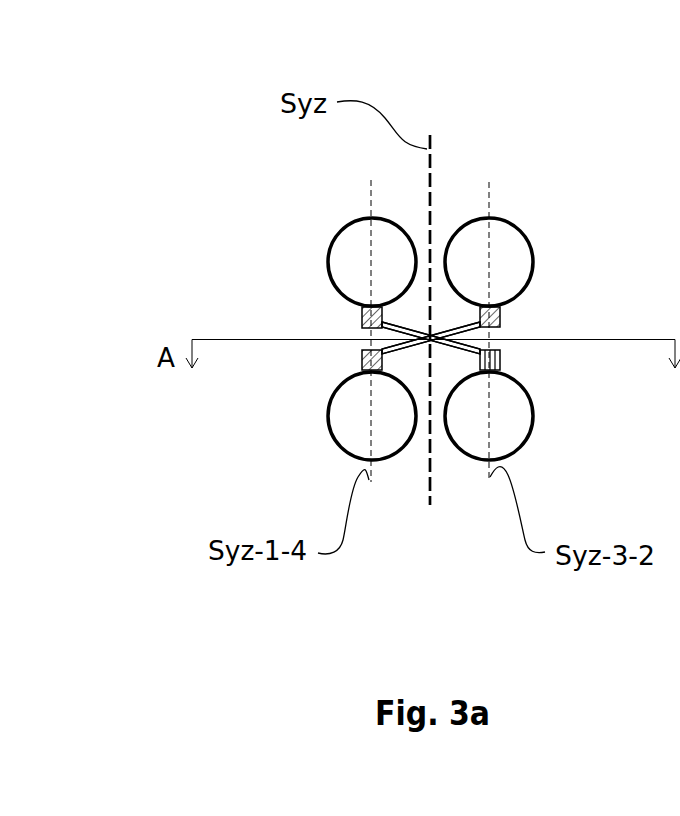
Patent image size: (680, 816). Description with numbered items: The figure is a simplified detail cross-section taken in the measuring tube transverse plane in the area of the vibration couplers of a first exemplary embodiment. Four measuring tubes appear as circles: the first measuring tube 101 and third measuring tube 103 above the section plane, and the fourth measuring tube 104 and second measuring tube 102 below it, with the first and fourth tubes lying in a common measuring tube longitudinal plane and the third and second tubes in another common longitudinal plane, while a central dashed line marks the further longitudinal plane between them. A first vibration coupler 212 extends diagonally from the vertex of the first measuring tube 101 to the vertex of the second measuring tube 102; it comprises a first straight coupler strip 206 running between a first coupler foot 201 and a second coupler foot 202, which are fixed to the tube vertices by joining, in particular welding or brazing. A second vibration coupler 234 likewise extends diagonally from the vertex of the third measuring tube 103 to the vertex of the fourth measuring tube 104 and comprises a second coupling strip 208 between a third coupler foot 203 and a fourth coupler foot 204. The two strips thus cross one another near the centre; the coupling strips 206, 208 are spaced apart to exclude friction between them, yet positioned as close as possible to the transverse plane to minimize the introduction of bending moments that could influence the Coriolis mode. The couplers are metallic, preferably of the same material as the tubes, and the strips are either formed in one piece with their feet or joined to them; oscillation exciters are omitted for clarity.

The first measuring tube 101 is at (350, 220).
The second measuring tube 102 is at (523, 445).
The third measuring tube 103 is at (522, 228).
The fourth measuring tube 104 is at (340, 450).
The first coupler foot 201 is at (362, 308).
The second coupler foot 202 is at (500, 363).
The third coupler foot 203 is at (500, 315).
The fourth coupler foot 204 is at (363, 357).
The first straight coupler strip 206 is at (448, 348).
The second coupling strip 208 is at (447, 335).
The first vibration coupler 212 is at (362, 326).
The second vibration coupler 234 is at (500, 328).